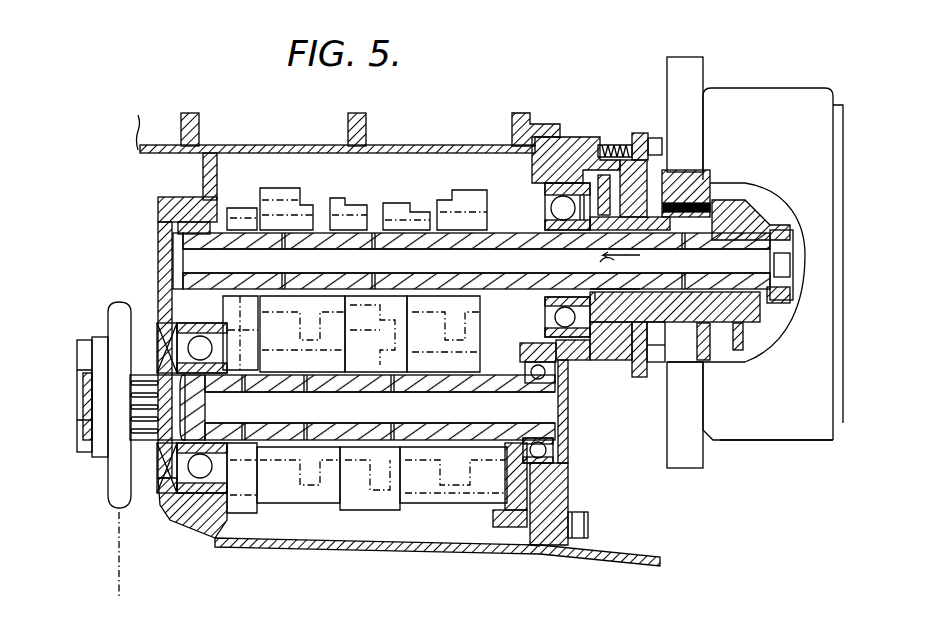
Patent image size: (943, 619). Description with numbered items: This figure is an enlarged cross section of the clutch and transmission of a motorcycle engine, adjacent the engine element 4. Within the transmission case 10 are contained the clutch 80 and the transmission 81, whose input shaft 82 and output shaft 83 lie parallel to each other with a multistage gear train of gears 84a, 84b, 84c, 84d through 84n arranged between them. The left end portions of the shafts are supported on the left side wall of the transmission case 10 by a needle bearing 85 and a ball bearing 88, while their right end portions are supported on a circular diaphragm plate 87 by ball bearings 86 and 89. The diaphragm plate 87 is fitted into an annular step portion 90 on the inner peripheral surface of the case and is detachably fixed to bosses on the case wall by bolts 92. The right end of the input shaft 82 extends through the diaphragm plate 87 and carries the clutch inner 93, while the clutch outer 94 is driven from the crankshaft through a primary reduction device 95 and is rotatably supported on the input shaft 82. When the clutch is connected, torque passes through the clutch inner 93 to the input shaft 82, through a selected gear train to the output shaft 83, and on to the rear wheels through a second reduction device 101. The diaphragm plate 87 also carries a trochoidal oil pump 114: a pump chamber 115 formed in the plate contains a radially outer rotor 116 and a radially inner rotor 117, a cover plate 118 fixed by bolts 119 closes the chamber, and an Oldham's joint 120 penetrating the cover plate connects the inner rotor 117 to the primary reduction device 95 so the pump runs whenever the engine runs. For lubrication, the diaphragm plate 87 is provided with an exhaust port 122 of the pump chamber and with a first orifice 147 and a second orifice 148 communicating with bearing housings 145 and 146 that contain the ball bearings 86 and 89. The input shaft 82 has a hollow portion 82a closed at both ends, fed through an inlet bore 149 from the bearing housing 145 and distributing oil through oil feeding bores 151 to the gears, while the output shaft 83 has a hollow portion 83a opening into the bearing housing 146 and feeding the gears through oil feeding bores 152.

The engine crankcase 4 is at (139, 150).
The transmission case 10 is at (336, 548).
The clutch 80 is at (773, 264).
The transmission 81 is at (431, 164).
The input shaft 82 is at (765, 240).
The hollow portion 82a is at (455, 275).
The output shaft 83 is at (80, 406).
The hollow portion 83a is at (527, 414).
The gear 84a is at (241, 206).
The gear 84b is at (405, 203).
The gear 84c is at (350, 197).
The gear 84d is at (468, 190).
The gear 84n is at (277, 188).
The needle bearing 85 is at (193, 221).
The ball bearing 86 is at (559, 212).
The diaphragm plate 87 is at (562, 548).
The ball bearing 88 is at (213, 468).
The ball bearing 89 is at (555, 451).
The annular step portion 90 is at (542, 548).
The bolt 92 is at (588, 525).
The clutch inner 93 is at (757, 312).
The clutch outer 94 is at (779, 433).
The primary reduction device 95 is at (683, 57).
The second reduction device 101 is at (100, 328).
The oil pump 114 is at (607, 137).
The pump chamber 115 is at (647, 377).
The outer rotor 116 is at (632, 377).
The inner rotor 117 is at (656, 338).
The cover plate 118 is at (640, 133).
The bolt 119 is at (655, 147).
The Oldham's joint 120 is at (675, 285).
The exhaust port 122 is at (575, 382).
The bearing housing 145 is at (560, 193).
The bearing housing 146 is at (538, 350).
The first orifice 147 is at (615, 285).
The second orifice 148 is at (560, 348).
The inlet bore 149 is at (567, 306).
The oil feeding bore 151 is at (283, 250).
The oil feeding bore 152 is at (245, 394).